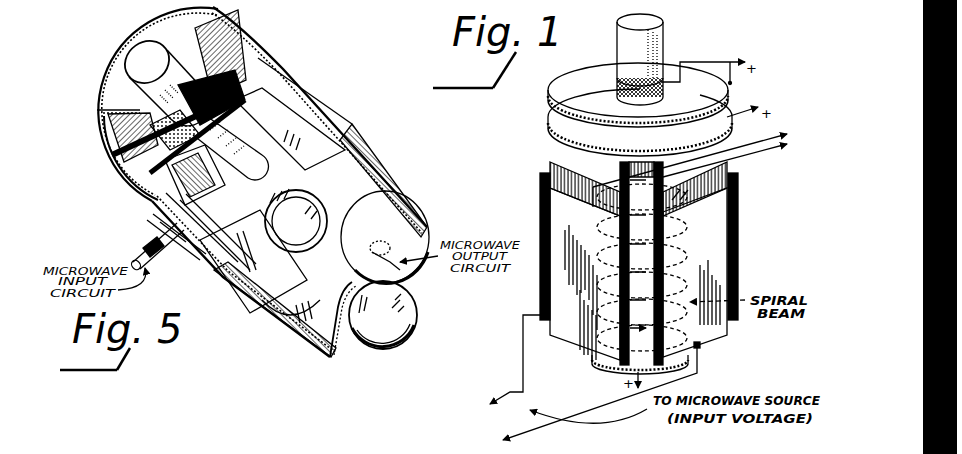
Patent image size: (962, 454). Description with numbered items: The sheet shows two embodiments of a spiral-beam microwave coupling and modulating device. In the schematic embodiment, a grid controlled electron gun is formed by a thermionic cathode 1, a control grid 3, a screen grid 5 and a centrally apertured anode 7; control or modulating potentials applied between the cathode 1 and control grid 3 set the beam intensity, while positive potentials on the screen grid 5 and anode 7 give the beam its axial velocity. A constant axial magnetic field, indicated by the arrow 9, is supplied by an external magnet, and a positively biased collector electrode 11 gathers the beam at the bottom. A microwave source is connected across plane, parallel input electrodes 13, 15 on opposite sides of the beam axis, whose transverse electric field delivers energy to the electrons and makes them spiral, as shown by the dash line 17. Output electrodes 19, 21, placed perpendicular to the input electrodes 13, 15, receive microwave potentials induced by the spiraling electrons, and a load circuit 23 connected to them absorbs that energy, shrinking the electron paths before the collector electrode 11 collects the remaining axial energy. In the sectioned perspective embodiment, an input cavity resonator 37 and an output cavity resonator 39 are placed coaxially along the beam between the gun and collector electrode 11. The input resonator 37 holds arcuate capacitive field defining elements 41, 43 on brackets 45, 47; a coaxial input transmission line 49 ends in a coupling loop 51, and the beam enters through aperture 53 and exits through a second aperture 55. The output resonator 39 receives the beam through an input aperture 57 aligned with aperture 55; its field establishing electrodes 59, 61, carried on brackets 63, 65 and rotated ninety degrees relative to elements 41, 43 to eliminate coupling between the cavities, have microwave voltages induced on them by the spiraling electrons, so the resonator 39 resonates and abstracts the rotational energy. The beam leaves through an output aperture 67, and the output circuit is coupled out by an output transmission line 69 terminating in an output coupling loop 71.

In FIG. 5, the thermionic cathode 1 is at (138, 72).
In FIG. 1, the thermionic cathode 1 is at (617, 40).
In FIG. 5, the control grid 3 is at (192, 58).
In FIG. 1, the control grid 3 is at (620, 87).
In FIG. 5, the screen grid 5 is at (110, 152).
In FIG. 1, the screen grid 5 is at (549, 92).
In FIG. 5, the centrally apertured anode 7 is at (132, 187).
In FIG. 1, the centrally apertured anode 7 is at (549, 118).
In FIG. 5, the axial magnetic field 9 is at (124, 34).
In FIG. 1, the axial magnetic field 9 is at (660, 19).
In FIG. 5, the collector electrode 11 is at (412, 338).
In FIG. 1, the collector electrode 11 is at (527, 396).
In FIG. 1, the input microwave signal electrode 13 is at (556, 172).
In FIG. 1, the input microwave signal electrode 15 is at (720, 332).
In FIG. 5, the spiral electron beam path 17 is at (296, 221).
In FIG. 1, the spiral electron beam path 17 is at (685, 189).
In FIG. 1, the output microwave electrode 19 is at (575, 340).
In FIG. 1, the output microwave electrode 21 is at (738, 200).
In FIG. 1, the load circuit 23 is at (705, 166).
In FIG. 5, the input microwave signal cavity resonator 37 is at (286, 31).
In FIG. 5, the output microwave signal cavity resonator 39 is at (414, 179).
In FIG. 5, the capacitive field defining element 41 is at (195, 175).
In FIG. 5, the capacitive field defining element 43 is at (290, 129).
In FIG. 5, the bracket 45 is at (196, 248).
In FIG. 5, the bracket 47 is at (320, 112).
In FIG. 5, the coaxial input transmission line 49 is at (160, 233).
In FIG. 5, the coupling loop 51 is at (164, 211).
In FIG. 5, the aperture 53 is at (126, 155).
In FIG. 5, the second aperture 55 is at (230, 147).
In FIG. 5, the input aperture 57 is at (244, 251).
In FIG. 5, the field establishing electrode 59 is at (262, 214).
In FIG. 5, the field establishing electrode 61 is at (260, 262).
In FIG. 5, the bracket 63 is at (250, 213).
In FIG. 5, the bracket 65 is at (297, 306).
In FIG. 5, the output aperture 67 is at (346, 354).
In FIG. 5, the output transmission line 69 is at (385, 252).
In FIG. 5, the output coupling loop 71 is at (379, 274).